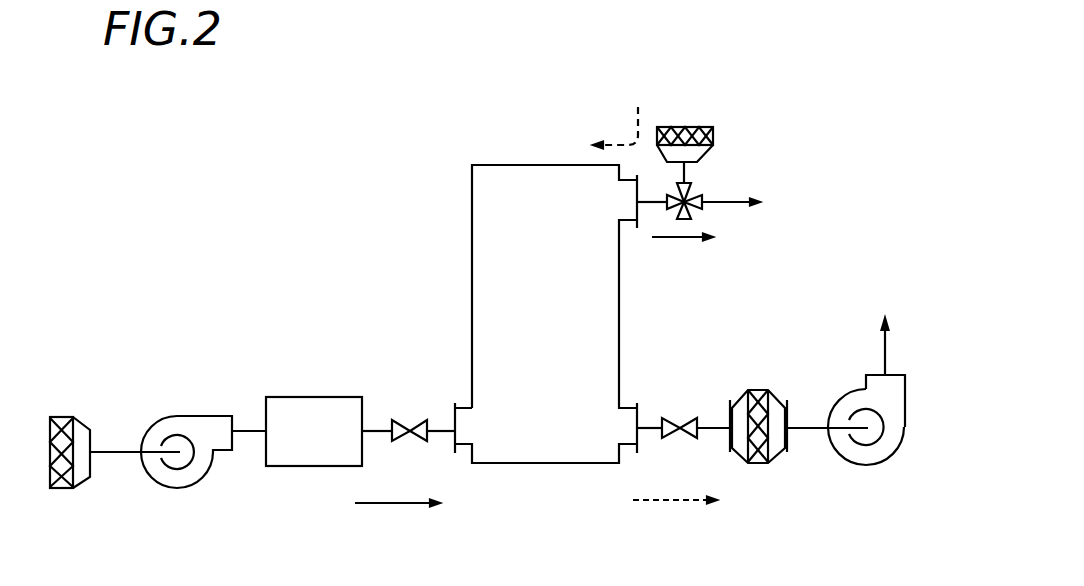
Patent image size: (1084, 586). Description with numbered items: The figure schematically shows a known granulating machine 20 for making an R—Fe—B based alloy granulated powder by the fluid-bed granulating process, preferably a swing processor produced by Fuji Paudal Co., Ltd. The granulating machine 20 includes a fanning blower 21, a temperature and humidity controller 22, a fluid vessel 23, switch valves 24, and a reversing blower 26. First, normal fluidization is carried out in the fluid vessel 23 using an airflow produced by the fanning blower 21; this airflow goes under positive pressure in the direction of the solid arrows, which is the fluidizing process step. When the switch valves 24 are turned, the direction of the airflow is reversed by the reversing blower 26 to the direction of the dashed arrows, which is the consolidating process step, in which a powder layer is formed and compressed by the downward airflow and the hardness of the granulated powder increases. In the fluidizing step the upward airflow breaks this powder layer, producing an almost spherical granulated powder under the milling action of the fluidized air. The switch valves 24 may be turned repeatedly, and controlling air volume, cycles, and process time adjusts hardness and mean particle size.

The granulating machine 20 is at (884, 128).
The fanning blower 21 is at (190, 413).
The temperature and humidity controller 22 is at (320, 397).
The fluid vessel 23 is at (472, 286).
The switch valves 24 is at (402, 419).
The reversing blower 26 is at (840, 454).